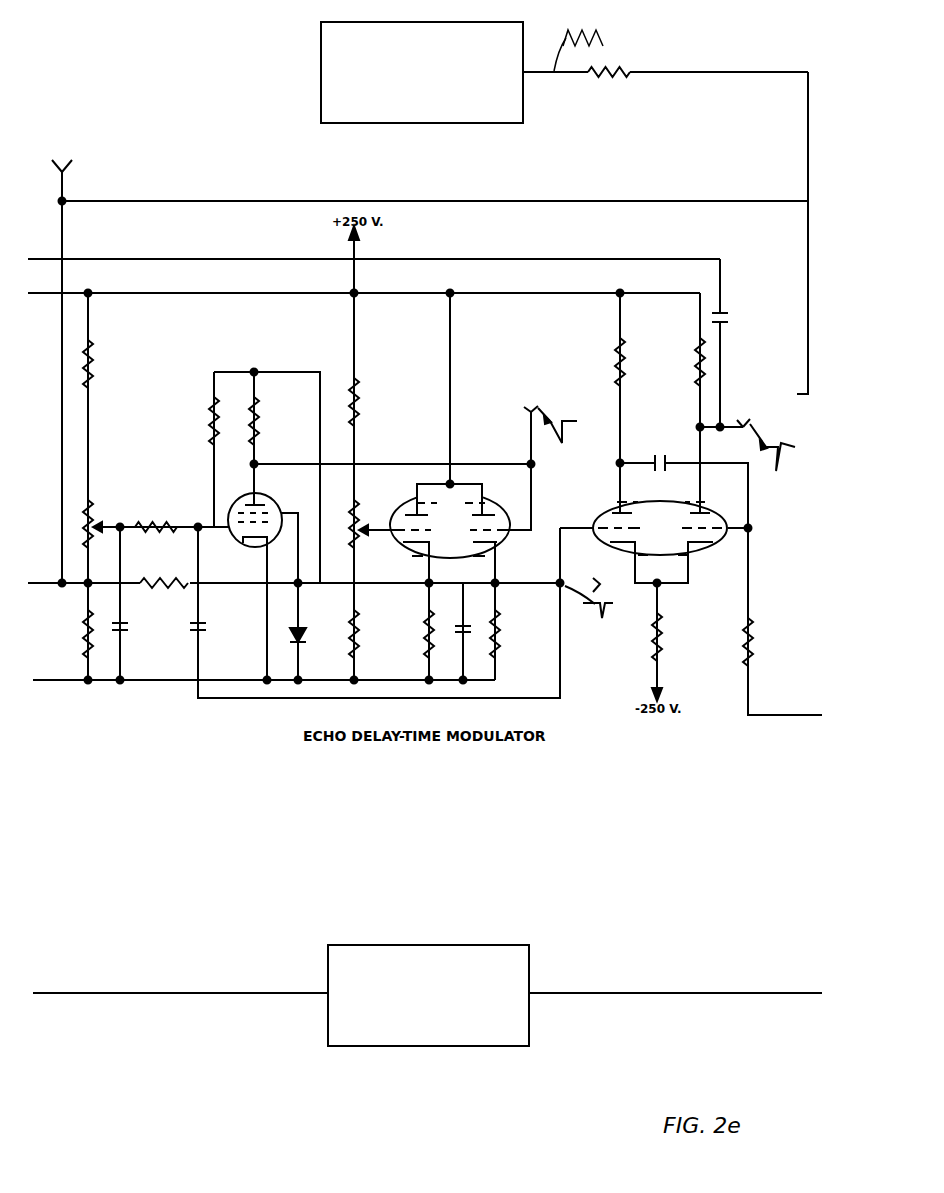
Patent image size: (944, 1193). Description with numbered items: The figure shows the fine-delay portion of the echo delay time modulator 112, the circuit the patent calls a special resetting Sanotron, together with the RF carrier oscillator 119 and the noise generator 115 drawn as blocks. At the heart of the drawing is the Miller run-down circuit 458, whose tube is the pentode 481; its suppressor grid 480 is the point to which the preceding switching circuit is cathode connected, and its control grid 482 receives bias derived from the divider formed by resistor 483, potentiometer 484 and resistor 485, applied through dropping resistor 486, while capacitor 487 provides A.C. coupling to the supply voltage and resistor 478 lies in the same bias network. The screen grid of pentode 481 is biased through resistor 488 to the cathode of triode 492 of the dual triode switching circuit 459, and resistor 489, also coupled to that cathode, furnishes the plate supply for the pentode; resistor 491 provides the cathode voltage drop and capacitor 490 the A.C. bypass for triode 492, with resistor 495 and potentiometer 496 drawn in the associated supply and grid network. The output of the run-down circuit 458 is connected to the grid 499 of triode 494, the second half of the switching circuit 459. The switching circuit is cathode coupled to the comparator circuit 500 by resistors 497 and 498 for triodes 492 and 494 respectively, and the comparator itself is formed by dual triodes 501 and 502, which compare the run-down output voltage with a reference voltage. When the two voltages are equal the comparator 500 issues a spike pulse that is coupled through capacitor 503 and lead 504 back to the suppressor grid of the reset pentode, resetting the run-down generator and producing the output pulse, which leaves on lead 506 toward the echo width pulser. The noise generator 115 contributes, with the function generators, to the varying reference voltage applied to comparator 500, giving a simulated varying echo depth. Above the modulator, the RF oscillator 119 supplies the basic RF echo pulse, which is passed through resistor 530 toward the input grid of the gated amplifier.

The RF carrier oscillator 119 is at (482, 22).
The resistor 530 is at (617, 77).
The lead 506 is at (62, 236).
The lead 504 is at (648, 263).
The capacitor 503 is at (722, 311).
The resistor 483 is at (95, 367).
The resistor 488 is at (212, 418).
The resistor 489 is at (255, 418).
The suppressor grid 480 is at (285, 514).
The potentiometer 484 is at (96, 515).
The grid 482 is at (212, 523).
The dropping resistor 486 is at (156, 542).
The pentode 481 is at (235, 541).
The resistor 478 is at (170, 588).
The resistor 485 is at (85, 647).
The capacitor 487 is at (125, 630).
The Miller run-down circuit 458 is at (255, 592).
The echo delay time modulator 112 is at (219, 702).
The resistor 495 is at (364, 414).
The dual triode switching circuit 459 is at (441, 493).
The triode 492 is at (397, 504).
The triode 494 is at (497, 504).
The potentiometer 496 is at (360, 532).
The grid 499 is at (520, 533).
The capacitor 490 is at (466, 622).
The resistor 491 is at (425, 618).
The resistor 497 is at (361, 630).
The resistor 498 is at (499, 631).
The triode 501 is at (603, 506).
The triode 502 is at (712, 556).
The comparator circuit 500 is at (680, 604).
The noise generator 115 is at (492, 945).